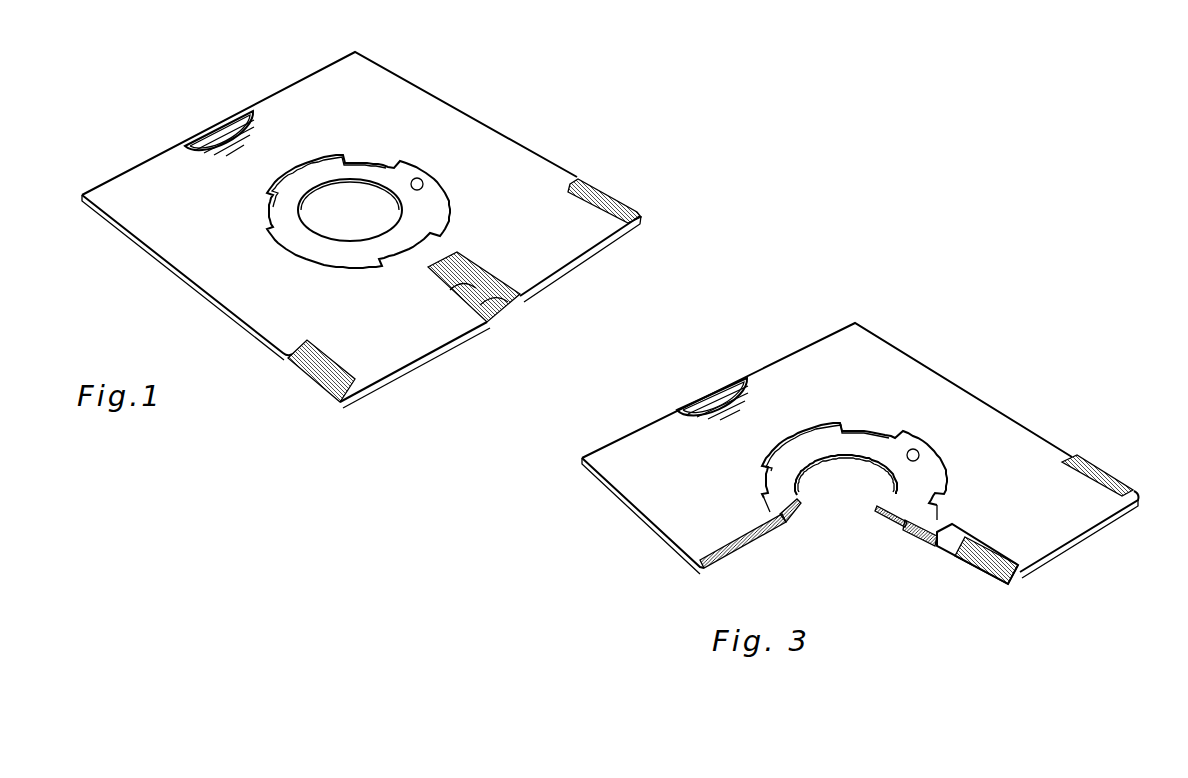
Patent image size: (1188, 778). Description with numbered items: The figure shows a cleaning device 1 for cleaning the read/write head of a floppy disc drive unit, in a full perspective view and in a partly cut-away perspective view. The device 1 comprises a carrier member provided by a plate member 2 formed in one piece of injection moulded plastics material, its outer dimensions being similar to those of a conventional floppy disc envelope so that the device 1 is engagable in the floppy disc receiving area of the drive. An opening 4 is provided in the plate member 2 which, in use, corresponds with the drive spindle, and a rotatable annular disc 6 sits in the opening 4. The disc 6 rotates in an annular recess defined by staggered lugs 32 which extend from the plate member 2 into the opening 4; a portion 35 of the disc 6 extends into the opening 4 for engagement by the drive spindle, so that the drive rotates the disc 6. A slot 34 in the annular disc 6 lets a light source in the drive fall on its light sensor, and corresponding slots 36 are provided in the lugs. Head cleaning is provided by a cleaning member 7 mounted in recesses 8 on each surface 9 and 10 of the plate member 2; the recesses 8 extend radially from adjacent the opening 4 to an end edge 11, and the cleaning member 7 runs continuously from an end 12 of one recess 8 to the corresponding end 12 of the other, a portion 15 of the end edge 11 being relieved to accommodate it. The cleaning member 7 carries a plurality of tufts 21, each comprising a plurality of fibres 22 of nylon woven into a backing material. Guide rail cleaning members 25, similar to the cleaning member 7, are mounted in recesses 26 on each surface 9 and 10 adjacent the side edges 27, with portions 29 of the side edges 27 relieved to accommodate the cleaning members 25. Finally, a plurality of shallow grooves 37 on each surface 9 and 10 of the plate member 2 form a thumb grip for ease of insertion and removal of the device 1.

In FIG. 1, the cleaning device 1 is at (548, 106).
In FIG. 3, the cleaning device 1 is at (988, 294).
In FIG. 1, the plate member 2 is at (442, 127).
In FIG. 3, the plate member 2 is at (852, 345).
In FIG. 1, the opening 4 is at (360, 202).
In FIG. 1, the rotatable annular disc 6 is at (437, 200).
In FIG. 3, the rotatable annular disc 6 is at (927, 487).
In FIG. 1, the cleaning member 7 is at (487, 265).
In FIG. 3, the cleaning member 7 is at (985, 563).
In FIG. 1, the recesses 8 is at (460, 258).
In FIG. 3, the recesses 8 is at (943, 547).
In FIG. 1, the surface 9 is at (605, 200).
In FIG. 3, the surface 9 is at (890, 370).
In FIG. 1, the surface 10 is at (447, 357).
In FIG. 3, the surface 10 is at (750, 547).
In FIG. 1, the end edge 11 is at (468, 332).
In FIG. 3, the end edge 11 is at (1087, 537).
In FIG. 1, the end 12 is at (425, 258).
In FIG. 3, the end 12 is at (950, 528).
In FIG. 1, the portion of end edge 15 is at (575, 303).
In FIG. 3, the portion of end edge 15 is at (1017, 580).
In FIG. 1, the tufts 21 is at (508, 297).
In FIG. 3, the tufts 21 is at (987, 583).
In FIG. 1, the fibres 22 is at (458, 287).
In FIG. 3, the fibres 22 is at (957, 560).
In FIG. 1, the cleaning members 25 is at (630, 213).
In FIG. 3, the cleaning members 25 is at (1113, 475).
In FIG. 1, the recesses 26 is at (283, 360).
In FIG. 1, the side edges 27 is at (213, 303).
In FIG. 3, the side edges 27 is at (667, 550).
In FIG. 1, the portions 29 is at (587, 217).
In FIG. 3, the portions 29 is at (1100, 465).
In FIG. 1, the lugs 32 is at (360, 155).
In FIG. 3, the lugs 32 is at (854, 471).
In FIG. 1, the slot 34 is at (418, 178).
In FIG. 3, the slot 34 is at (916, 450).
In FIG. 1, the portion of disc 35 is at (299, 238).
In FIG. 3, the portion of disc 35 is at (788, 498).
In FIG. 1, the slots 36 is at (423, 187).
In FIG. 3, the slots 36 is at (923, 450).
In FIG. 1, the shallow grooves 37 is at (217, 146).
In FIG. 3, the shallow grooves 37 is at (712, 399).